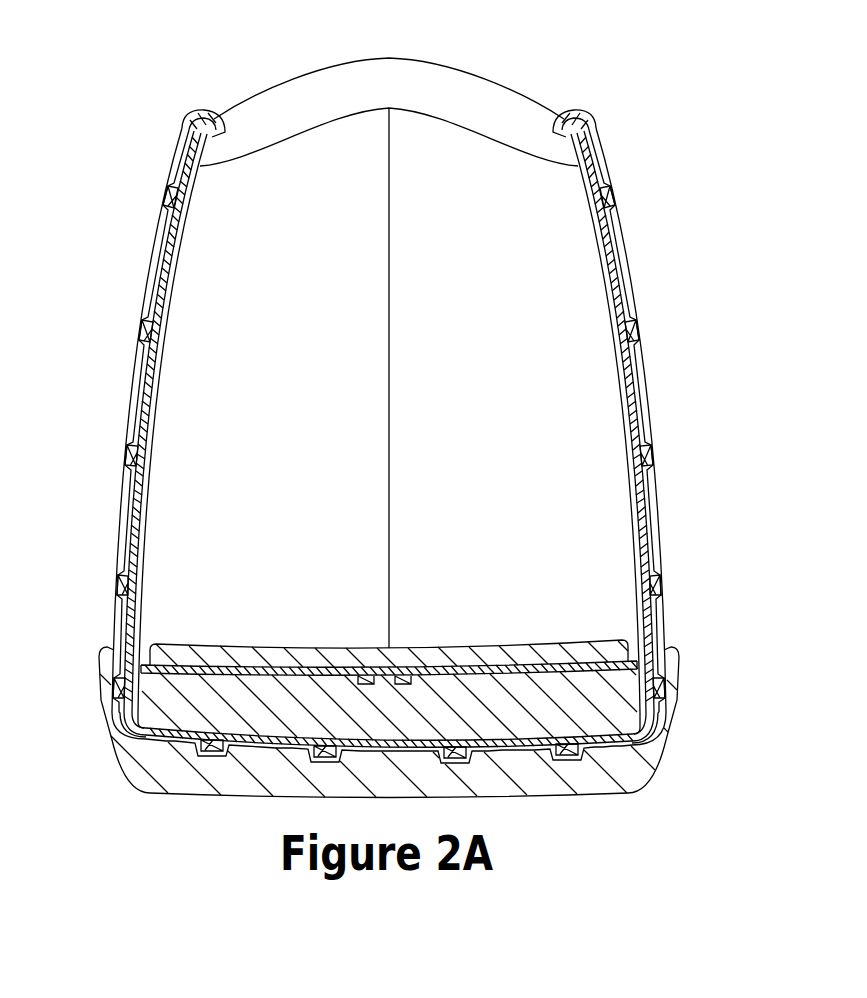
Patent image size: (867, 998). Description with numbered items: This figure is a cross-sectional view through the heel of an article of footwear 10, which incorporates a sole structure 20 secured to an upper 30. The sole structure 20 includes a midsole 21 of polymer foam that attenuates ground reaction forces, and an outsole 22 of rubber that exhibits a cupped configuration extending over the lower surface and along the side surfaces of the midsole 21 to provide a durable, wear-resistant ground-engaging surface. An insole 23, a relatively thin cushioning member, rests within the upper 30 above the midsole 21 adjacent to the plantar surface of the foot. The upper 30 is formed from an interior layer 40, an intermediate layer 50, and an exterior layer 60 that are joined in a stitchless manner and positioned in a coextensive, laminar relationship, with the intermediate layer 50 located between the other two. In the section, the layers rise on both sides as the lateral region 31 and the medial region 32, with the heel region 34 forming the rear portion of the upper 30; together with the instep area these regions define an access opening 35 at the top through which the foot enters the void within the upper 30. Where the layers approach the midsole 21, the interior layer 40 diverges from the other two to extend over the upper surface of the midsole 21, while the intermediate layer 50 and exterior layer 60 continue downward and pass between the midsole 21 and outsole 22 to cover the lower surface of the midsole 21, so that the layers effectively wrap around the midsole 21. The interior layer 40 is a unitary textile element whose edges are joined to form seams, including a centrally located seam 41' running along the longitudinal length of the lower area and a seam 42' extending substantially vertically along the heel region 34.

The article of footwear 10 is at (136, 141).
The sole structure 20 is at (140, 790).
The midsole 21 is at (228, 690).
The outsole 22 is at (210, 793).
The insole 23 is at (487, 655).
The upper 30 is at (133, 372).
The lateral region 31 is at (132, 407).
The medial region 32 is at (652, 386).
The heel region 34 is at (502, 307).
The access opening 35 is at (388, 72).
The interior layer 40 is at (160, 420).
The seam 41' is at (414, 699).
The seam 42' is at (349, 378).
The intermediate layer 50 is at (168, 331).
The exterior layer 60 is at (166, 268).